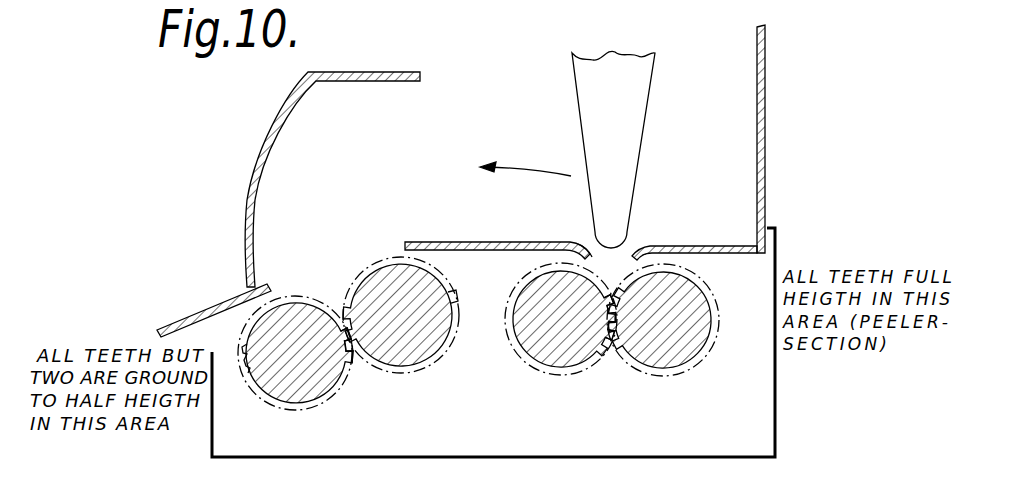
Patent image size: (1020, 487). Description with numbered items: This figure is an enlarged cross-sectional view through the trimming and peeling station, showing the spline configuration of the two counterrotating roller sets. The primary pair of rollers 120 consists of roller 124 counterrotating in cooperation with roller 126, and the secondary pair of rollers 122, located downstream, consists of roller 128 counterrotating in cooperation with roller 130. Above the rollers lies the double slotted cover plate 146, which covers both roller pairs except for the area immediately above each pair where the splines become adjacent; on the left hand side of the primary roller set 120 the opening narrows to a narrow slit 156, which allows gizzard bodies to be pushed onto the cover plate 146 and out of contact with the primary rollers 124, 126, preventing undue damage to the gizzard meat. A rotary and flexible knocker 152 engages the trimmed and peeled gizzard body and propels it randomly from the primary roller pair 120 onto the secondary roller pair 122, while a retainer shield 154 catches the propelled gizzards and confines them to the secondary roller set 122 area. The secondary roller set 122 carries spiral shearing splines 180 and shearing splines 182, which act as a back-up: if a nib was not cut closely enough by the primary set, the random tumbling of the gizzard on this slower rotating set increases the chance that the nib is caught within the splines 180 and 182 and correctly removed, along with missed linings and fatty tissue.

The primary pair of rollers 120 is at (609, 377).
The secondary pair of rollers 122 is at (370, 388).
The roller 124 is at (698, 342).
The roller 126 is at (537, 353).
The roller 128 is at (425, 348).
The roller 130 is at (297, 393).
The double slotted cover plate 146 is at (497, 222).
The rotary and flexible knocker 152 is at (637, 122).
The retainer shield 154 is at (257, 190).
The narrow slit 156 is at (588, 250).
The spiral shearing splines 180 is at (347, 343).
The shearing splines 182 is at (456, 296).